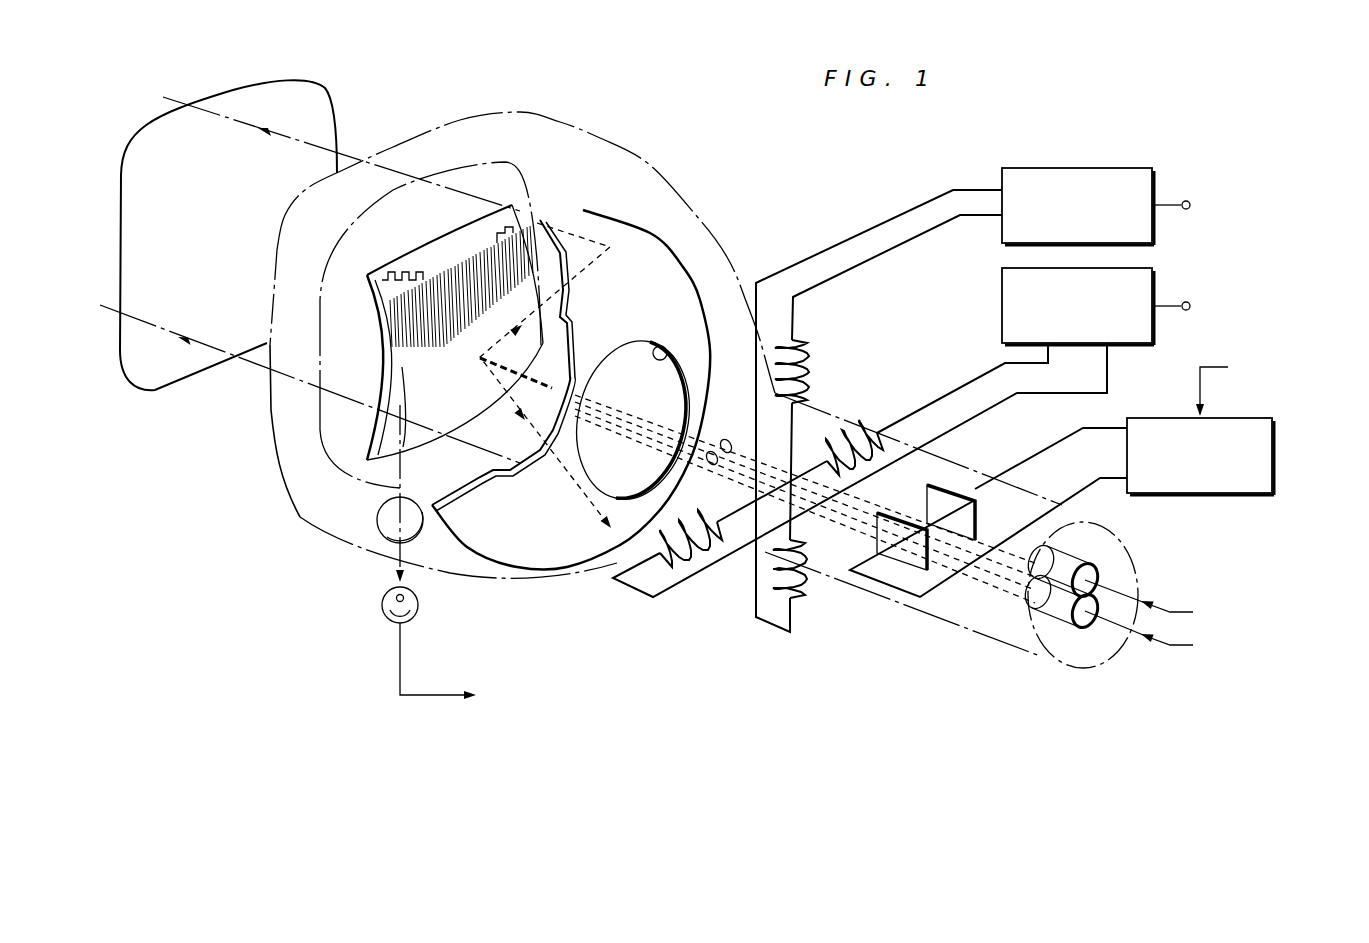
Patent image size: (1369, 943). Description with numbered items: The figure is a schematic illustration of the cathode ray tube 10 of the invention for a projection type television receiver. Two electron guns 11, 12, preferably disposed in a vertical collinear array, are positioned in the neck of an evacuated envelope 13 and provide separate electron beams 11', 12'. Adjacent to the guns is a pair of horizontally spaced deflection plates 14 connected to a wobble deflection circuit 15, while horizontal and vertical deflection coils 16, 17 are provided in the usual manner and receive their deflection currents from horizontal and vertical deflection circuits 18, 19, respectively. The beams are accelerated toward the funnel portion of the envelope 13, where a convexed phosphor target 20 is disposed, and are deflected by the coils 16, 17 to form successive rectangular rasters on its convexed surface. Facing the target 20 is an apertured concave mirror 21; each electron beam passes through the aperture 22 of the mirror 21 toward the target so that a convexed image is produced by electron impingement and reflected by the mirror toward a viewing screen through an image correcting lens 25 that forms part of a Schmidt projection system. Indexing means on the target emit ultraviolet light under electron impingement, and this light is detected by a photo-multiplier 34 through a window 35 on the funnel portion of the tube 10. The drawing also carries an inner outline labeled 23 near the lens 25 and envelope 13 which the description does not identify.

The cathode ray tube 10 is at (612, 103).
The electron gun 11 is at (1192, 578).
The electron beam 11' is at (734, 426).
The electron gun 12 is at (1190, 617).
The electron beam 12' is at (710, 476).
The evacuated envelope 13 is at (626, 160).
The deflection plates 14 is at (976, 516).
The wobble deflection circuit 15 is at (1274, 472).
The horizontal deflection coil 16 is at (870, 424).
The vertical deflection coil 17 is at (809, 353).
The horizontal deflection circuit 18 is at (1000, 306).
The vertical deflection circuit 19 is at (1128, 166).
The convexed phosphor target 20 is at (384, 353).
The apertured concave mirror 21 is at (662, 264).
The aperture 22 is at (667, 362).
The inner frame 23 is at (527, 167).
The image correcting lens 25 is at (332, 96).
The photo-multiplier 34 is at (382, 606).
The window 35 is at (380, 516).